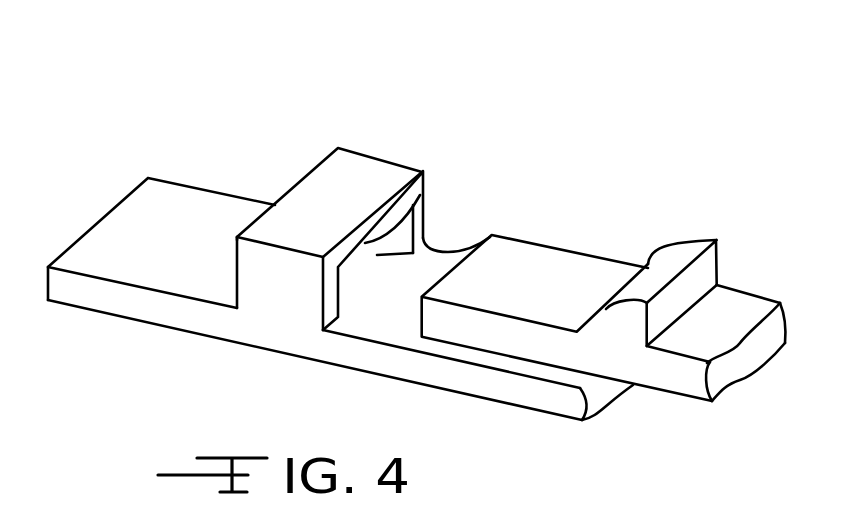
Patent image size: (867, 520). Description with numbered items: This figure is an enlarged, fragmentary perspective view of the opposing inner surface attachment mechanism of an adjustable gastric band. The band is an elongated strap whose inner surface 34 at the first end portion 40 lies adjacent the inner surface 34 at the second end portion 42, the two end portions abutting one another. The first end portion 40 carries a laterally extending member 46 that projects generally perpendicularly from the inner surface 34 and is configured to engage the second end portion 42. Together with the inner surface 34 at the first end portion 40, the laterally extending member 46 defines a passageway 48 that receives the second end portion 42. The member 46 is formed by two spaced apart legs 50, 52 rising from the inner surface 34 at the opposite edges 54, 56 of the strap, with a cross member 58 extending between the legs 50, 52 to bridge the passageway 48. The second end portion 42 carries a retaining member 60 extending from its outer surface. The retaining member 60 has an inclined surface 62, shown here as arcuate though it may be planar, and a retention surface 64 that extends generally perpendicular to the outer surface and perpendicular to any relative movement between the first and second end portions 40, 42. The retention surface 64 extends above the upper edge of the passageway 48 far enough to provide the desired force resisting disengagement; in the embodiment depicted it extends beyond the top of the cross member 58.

The inner surface 34 is at (182, 222).
The first end portion 40 is at (270, 348).
The second end portion 42 is at (728, 302).
The laterally extending member 46 is at (362, 176).
The passageway 48 is at (422, 171).
The leg 50 is at (255, 276).
The leg 52 is at (425, 230).
The edge of the strap 54 is at (163, 312).
The edge of the strap 56 is at (448, 252).
The cross member 58 is at (317, 210).
The retaining member 60 is at (695, 257).
The inclined surface 62 is at (658, 280).
The retention surface 64 is at (708, 275).